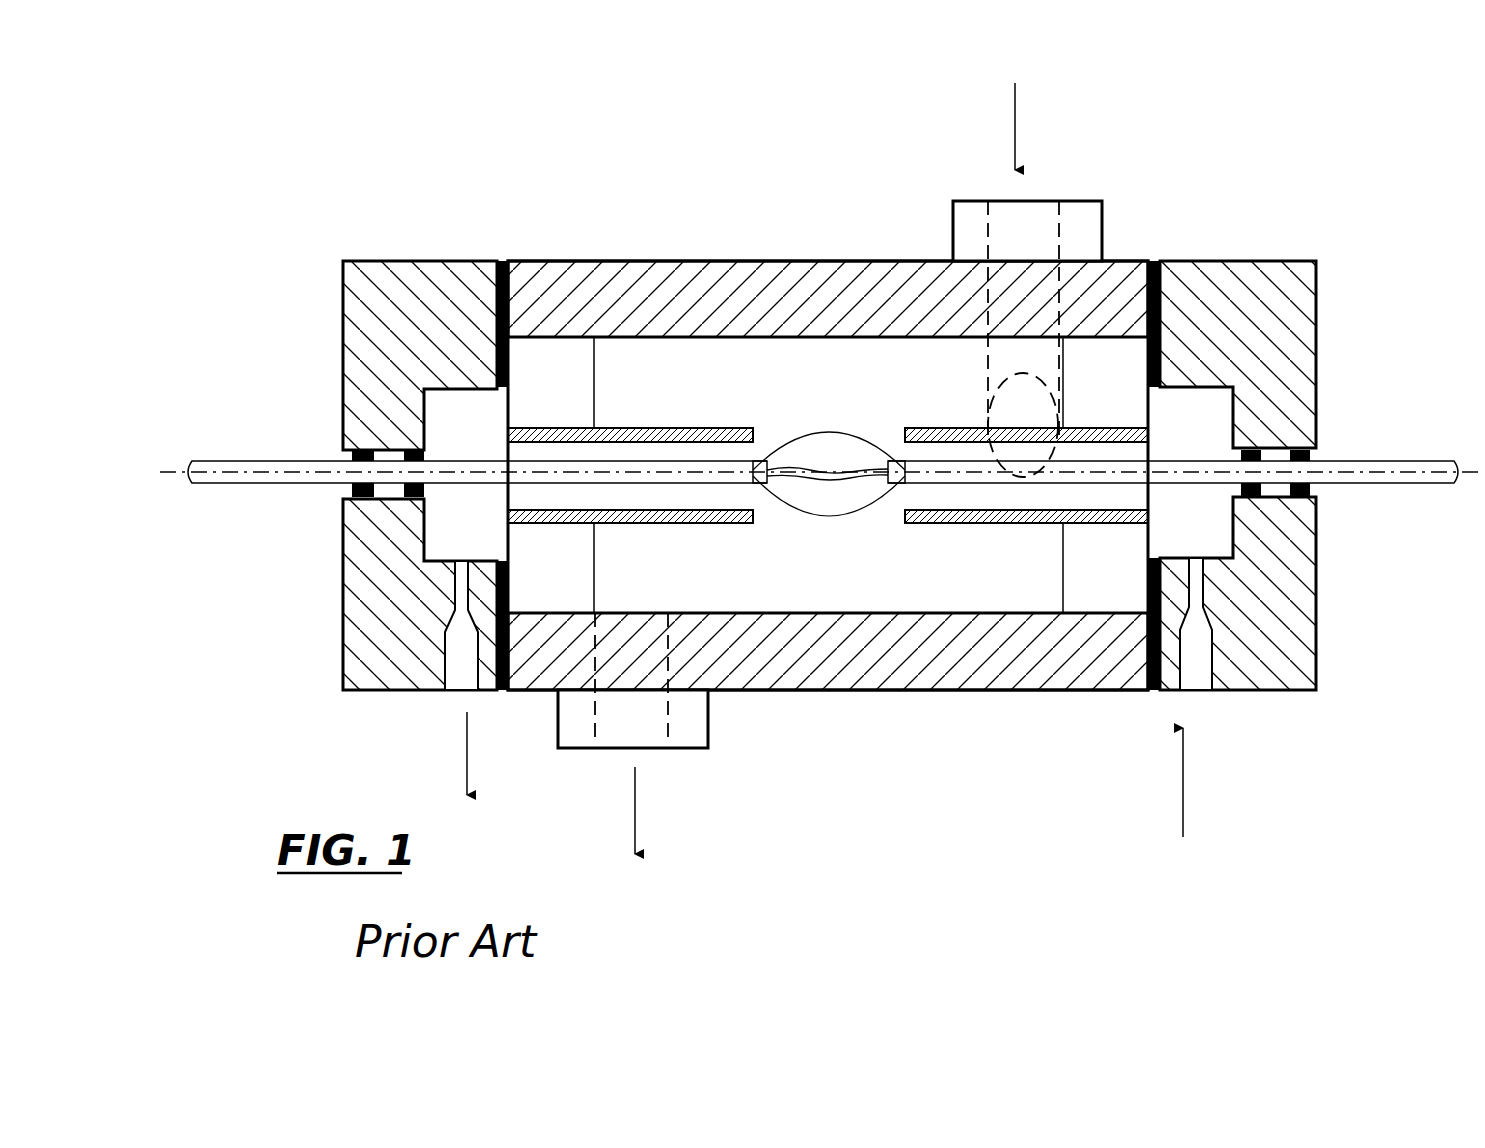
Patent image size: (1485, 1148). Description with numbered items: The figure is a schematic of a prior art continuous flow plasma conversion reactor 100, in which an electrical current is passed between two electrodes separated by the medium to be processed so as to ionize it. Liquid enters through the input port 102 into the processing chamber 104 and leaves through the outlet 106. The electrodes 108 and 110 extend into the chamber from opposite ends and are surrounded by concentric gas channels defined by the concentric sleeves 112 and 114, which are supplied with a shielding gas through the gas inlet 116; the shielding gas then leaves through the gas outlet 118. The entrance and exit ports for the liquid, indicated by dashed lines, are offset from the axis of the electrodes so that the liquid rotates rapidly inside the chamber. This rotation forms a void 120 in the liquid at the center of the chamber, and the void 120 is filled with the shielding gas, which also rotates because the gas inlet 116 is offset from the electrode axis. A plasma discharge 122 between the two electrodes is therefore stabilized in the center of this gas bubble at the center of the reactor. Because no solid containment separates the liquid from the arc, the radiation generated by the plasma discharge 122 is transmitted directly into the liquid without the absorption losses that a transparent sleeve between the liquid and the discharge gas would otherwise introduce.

The conversion reactor 100 is at (553, 196).
The input port 102 is at (1102, 230).
The processing chamber 104 is at (666, 262).
The outlet 106 is at (712, 720).
The electrode 108 is at (1388, 485).
The electrode 110 is at (262, 460).
The concentric sleeve 112 is at (1010, 523).
The concentric sleeve 114 is at (650, 525).
The gas inlet 116 is at (1172, 695).
The gas outlet 118 is at (466, 695).
The void 120 is at (785, 505).
The plasma discharge 122 is at (800, 465).